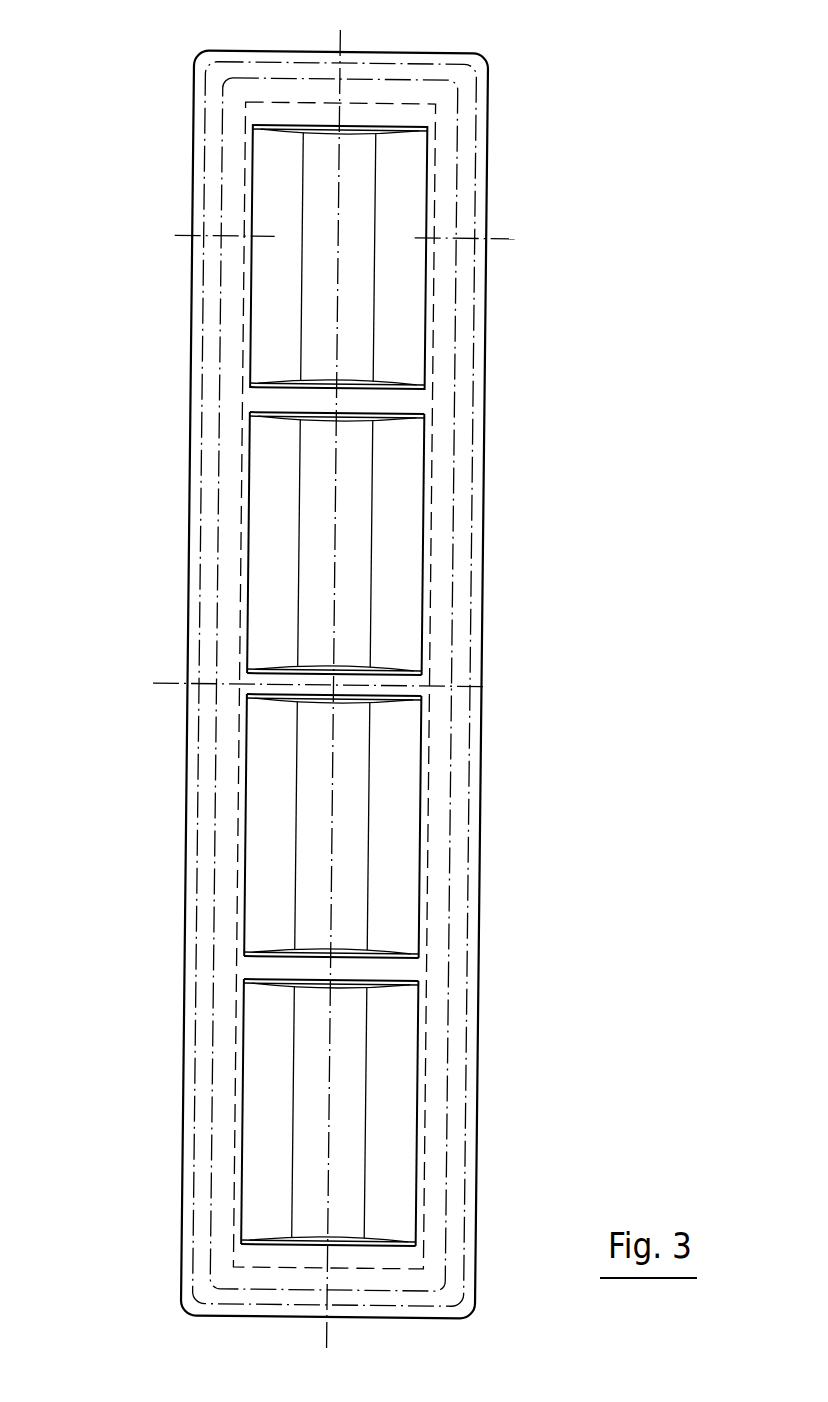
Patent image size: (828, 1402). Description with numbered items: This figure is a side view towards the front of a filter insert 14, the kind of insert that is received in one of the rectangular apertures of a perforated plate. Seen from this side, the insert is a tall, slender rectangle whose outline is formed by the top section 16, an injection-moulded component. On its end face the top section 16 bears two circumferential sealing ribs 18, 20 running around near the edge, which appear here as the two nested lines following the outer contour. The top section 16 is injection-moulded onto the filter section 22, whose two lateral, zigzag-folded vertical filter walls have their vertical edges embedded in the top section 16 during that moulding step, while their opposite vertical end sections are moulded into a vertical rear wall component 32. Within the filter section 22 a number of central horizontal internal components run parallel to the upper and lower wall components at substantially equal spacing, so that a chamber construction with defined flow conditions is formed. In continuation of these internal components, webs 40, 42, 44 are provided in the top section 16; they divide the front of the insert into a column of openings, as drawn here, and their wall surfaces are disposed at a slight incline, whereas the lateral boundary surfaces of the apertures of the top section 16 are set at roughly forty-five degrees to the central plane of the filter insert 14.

The filter insert 14 is at (603, 157).
The top section 16 is at (188, 500).
The circumferential sealing rib 18 is at (216, 712).
The circumferential sealing rib 20 is at (198, 822).
The filter section 22 is at (415, 317).
The rear wall component 32 is at (353, 490).
The web 40 is at (372, 418).
The web 42 is at (385, 688).
The web 44 is at (378, 968).